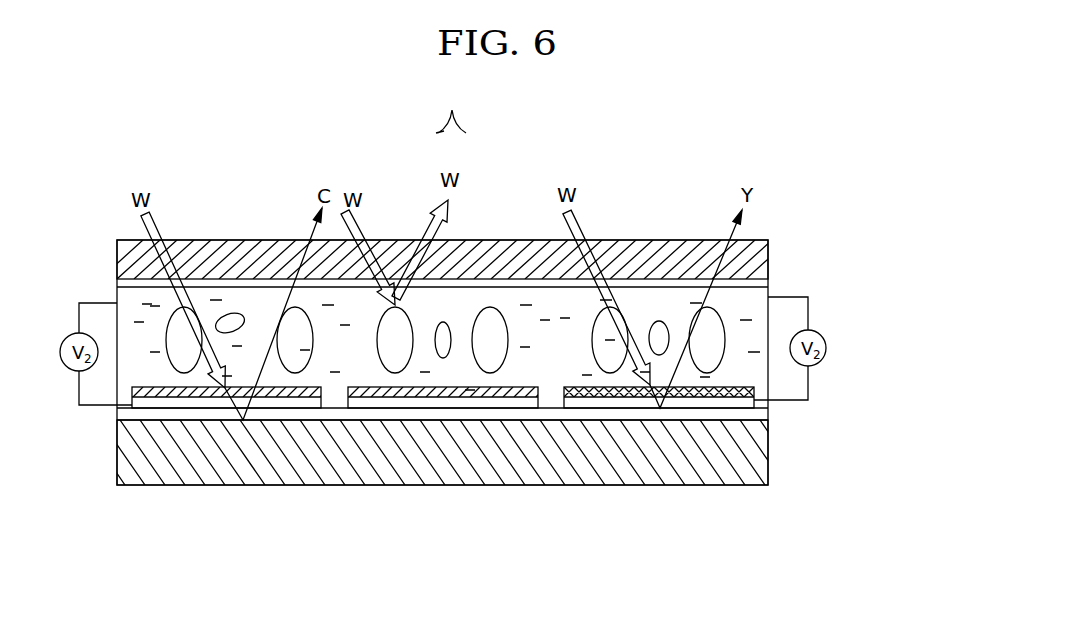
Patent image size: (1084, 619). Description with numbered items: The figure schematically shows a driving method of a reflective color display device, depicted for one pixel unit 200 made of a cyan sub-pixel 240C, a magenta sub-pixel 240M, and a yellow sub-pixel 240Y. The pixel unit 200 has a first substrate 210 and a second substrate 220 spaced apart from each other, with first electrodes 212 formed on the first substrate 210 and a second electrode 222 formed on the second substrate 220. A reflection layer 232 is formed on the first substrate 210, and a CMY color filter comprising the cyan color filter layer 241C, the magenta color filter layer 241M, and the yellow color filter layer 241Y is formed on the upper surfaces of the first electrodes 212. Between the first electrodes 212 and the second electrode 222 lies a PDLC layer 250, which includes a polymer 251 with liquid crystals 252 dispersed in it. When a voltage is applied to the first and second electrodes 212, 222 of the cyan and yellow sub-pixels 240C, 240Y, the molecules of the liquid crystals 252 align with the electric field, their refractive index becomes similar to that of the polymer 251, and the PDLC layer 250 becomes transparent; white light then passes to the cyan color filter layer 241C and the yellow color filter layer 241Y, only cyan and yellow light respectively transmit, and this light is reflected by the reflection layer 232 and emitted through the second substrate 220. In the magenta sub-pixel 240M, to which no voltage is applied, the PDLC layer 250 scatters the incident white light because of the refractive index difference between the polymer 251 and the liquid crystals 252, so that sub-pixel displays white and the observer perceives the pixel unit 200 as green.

The pixel unit 200 is at (785, 231).
The first substrate 210 is at (768, 452).
The first electrodes 212 is at (275, 405).
The second substrate 220 is at (768, 261).
The second electrodes 222 is at (768, 287).
The reflection layer 232 is at (768, 416).
The cyan sub-pixel 240C is at (325, 549).
The magenta sub-pixel 240M is at (340, 549).
The yellow sub-pixel 240Y is at (560, 549).
The cyan color filter layer 241C is at (192, 397).
The magenta color filter layer 241M is at (412, 397).
The yellow color filter layer 241Y is at (625, 397).
The PDLC layer 250 is at (878, 310).
The polymer 251 is at (753, 323).
The liquid crystals 252 is at (717, 353).